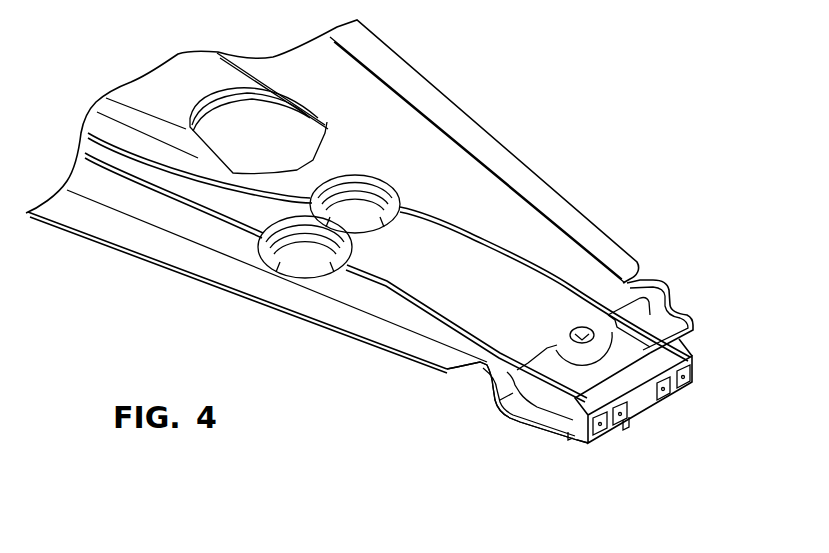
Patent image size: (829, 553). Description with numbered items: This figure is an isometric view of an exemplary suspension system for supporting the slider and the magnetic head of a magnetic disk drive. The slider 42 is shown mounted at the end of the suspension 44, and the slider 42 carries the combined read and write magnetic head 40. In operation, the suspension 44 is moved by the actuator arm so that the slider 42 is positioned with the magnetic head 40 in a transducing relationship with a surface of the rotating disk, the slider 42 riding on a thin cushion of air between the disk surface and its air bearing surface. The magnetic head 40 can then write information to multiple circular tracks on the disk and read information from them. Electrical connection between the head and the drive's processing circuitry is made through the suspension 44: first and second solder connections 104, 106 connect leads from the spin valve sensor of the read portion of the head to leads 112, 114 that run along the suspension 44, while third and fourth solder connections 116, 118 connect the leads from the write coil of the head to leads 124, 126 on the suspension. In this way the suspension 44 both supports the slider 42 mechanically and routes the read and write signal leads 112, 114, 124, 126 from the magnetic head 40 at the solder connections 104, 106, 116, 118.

The magnetic head 40 is at (657, 418).
The slider 42 is at (533, 437).
The suspension 44 is at (503, 133).
The first solder connection 104 is at (598, 435).
The second solder connection 106 is at (690, 377).
The lead 112 is at (380, 287).
The lead 114 is at (555, 277).
The third solder connection 116 is at (618, 425).
The fourth solder connection 118 is at (670, 395).
The lead 124 is at (420, 300).
The lead 126 is at (477, 237).